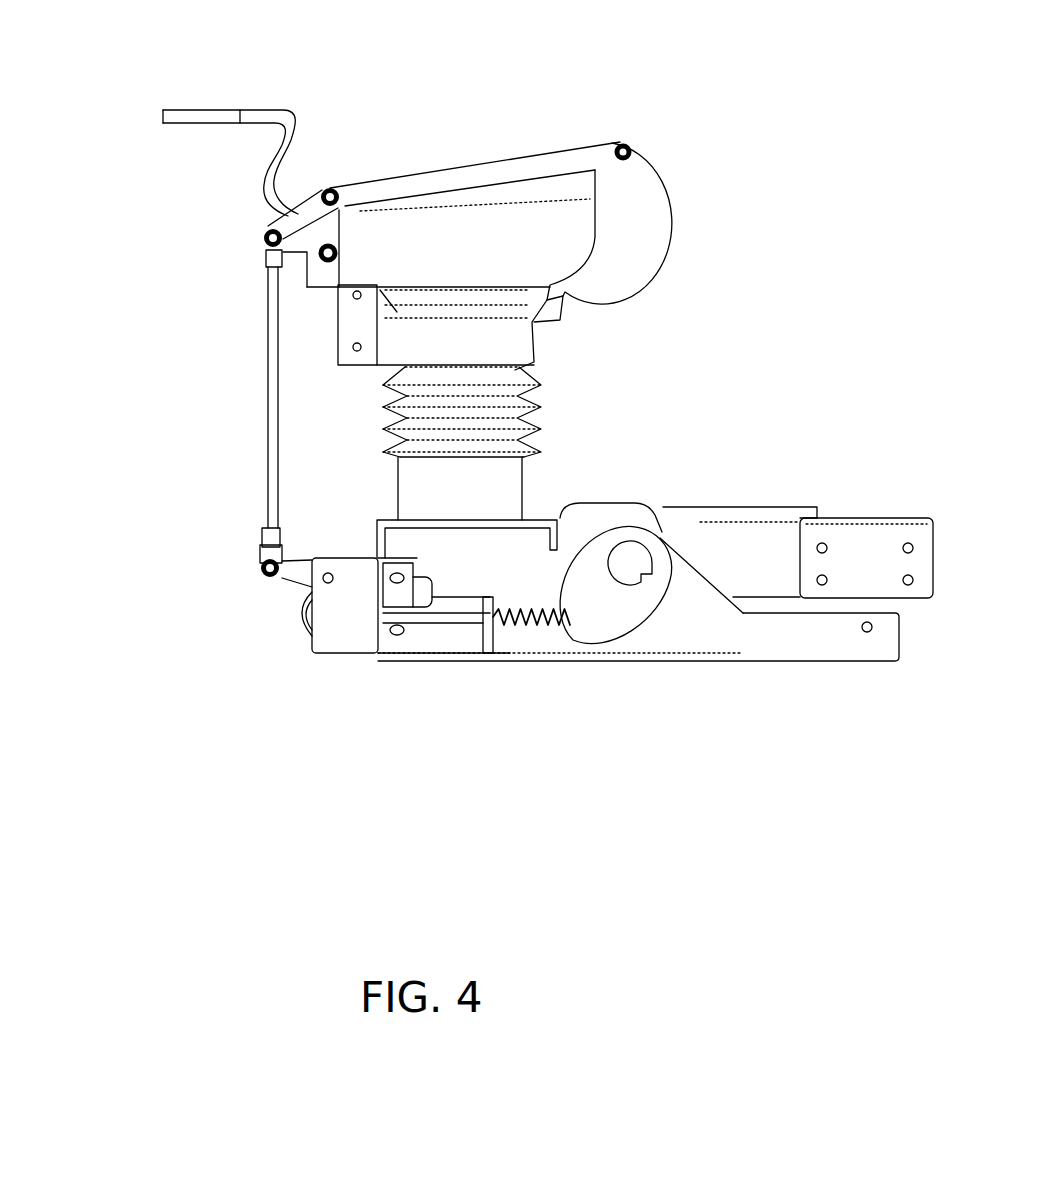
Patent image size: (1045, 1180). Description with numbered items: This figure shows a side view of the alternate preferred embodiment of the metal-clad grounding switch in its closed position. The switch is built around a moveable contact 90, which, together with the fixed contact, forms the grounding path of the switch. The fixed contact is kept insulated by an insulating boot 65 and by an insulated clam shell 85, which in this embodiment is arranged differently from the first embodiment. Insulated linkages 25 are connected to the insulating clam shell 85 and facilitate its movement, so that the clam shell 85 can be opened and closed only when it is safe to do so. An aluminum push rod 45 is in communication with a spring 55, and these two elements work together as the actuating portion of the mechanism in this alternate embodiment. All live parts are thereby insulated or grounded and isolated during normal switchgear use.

The insulated linkages 25 is at (267, 292).
The insulated clam shell 85 is at (677, 163).
The moveable contact 90 is at (864, 497).
The insulating boot 65 is at (334, 331).
The aluminum push rod 45 is at (456, 626).
The spring 55 is at (530, 633).